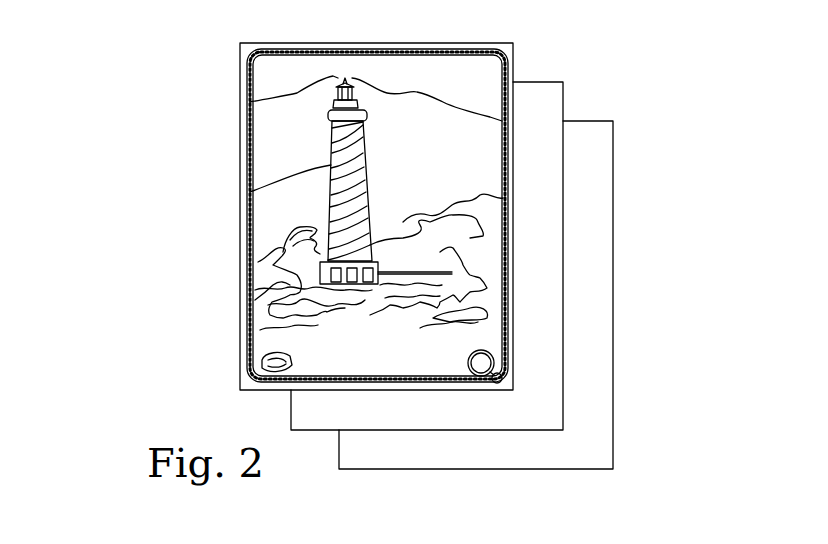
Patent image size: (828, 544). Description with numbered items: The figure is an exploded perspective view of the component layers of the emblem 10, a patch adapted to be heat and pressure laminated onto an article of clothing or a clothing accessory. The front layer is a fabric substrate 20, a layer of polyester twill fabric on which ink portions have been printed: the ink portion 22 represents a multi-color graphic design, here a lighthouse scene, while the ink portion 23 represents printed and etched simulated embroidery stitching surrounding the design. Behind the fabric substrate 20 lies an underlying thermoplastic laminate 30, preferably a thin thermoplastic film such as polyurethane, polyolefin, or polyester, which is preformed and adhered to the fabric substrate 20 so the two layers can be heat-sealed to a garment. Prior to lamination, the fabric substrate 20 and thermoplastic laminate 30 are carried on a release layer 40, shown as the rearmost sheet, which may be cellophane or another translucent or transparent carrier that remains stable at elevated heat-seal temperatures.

The emblem 10 is at (122, 160).
The fabric substrate 20 is at (515, 58).
The ink portion 22 is at (250, 192).
The ink portion 23 is at (258, 262).
The thermoplastic laminate 30 is at (563, 97).
The release layer 40 is at (613, 133).